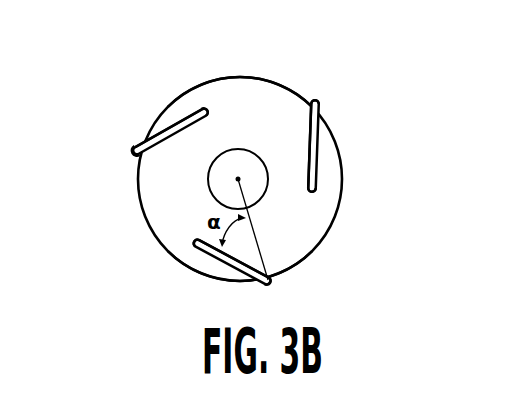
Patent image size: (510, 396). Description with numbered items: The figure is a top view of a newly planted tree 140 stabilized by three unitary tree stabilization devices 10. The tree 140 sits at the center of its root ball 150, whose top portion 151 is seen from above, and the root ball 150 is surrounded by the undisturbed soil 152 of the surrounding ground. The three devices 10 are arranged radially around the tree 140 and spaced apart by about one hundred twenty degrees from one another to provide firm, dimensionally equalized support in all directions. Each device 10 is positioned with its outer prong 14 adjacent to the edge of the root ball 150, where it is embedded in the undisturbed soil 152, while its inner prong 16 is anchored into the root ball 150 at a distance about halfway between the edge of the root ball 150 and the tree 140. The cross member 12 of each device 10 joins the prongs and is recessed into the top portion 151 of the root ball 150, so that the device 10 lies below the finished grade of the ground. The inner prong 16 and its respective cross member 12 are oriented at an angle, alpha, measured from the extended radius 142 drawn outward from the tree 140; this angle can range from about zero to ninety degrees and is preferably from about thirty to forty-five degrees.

The unitary tree stabilization device 10 is at (166, 119).
The cross member 12 is at (148, 139).
The outer prong 14 is at (134, 157).
The inner prong 16 is at (213, 108).
The tree 140 is at (262, 193).
The extended radius 142 is at (256, 242).
The root ball 150 is at (231, 72).
The top portion 151 is at (218, 92).
The undisturbed soil 152 is at (105, 224).